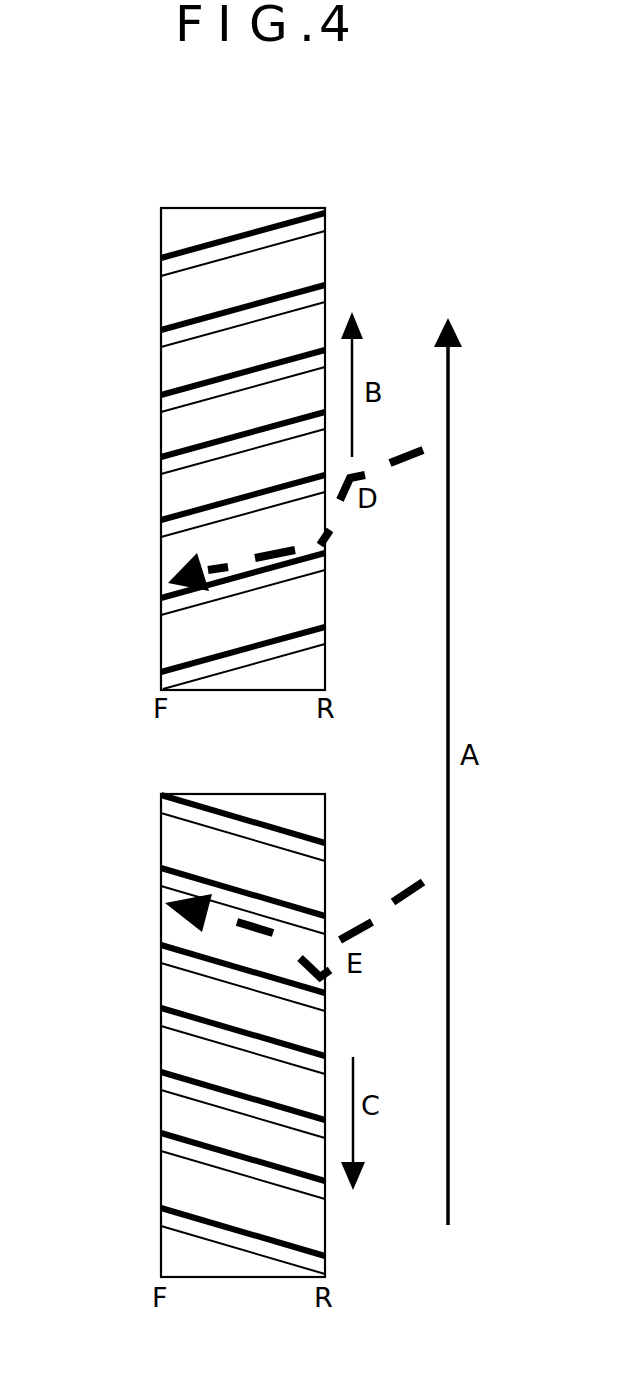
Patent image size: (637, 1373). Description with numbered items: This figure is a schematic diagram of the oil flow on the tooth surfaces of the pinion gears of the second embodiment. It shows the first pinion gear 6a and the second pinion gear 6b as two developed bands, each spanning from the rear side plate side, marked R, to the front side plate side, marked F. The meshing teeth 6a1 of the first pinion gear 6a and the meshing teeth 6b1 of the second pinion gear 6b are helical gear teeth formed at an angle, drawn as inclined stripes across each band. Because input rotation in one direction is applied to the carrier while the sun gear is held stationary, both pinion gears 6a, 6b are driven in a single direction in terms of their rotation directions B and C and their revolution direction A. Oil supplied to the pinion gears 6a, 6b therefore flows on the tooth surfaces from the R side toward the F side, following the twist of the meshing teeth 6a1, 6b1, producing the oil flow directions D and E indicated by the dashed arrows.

The first pinion gear 6a is at (150, 1228).
The meshing teeth of first pinion gear 6a1 is at (172, 833).
The second pinion gear 6b is at (150, 650).
The meshing teeth of second pinion gear 6b1 is at (199, 222).